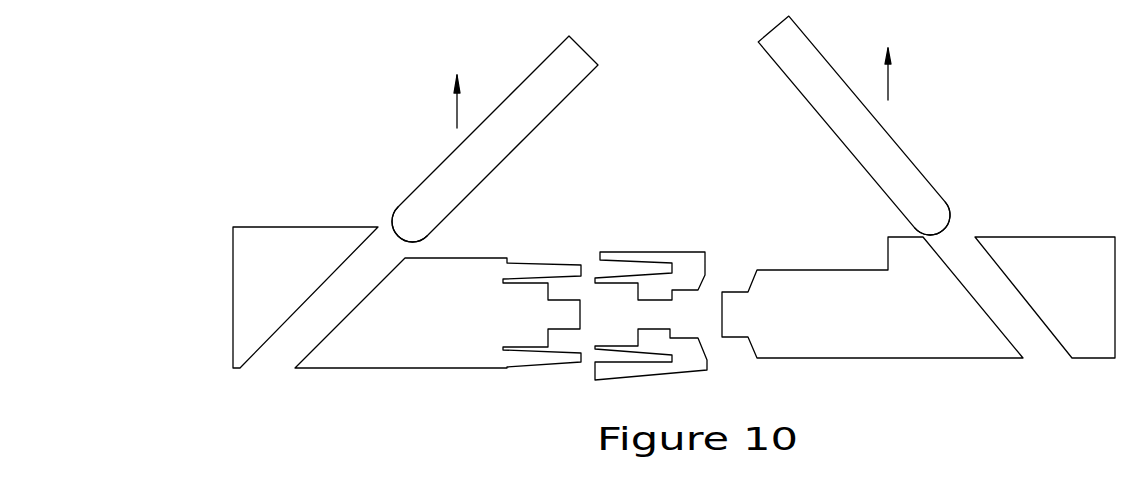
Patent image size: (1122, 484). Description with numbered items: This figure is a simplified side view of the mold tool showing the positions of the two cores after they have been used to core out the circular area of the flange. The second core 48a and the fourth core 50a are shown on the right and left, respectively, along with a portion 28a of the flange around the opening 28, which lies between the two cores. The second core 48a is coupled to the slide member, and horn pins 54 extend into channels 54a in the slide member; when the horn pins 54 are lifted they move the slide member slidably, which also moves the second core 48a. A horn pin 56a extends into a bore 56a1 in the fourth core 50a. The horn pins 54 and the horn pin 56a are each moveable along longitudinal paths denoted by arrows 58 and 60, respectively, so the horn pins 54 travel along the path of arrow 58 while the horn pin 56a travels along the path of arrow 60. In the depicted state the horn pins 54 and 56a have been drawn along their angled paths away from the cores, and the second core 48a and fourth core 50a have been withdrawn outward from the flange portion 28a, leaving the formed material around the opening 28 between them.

The opening 28 is at (630, 345).
The portion 28a is at (635, 252).
The second core 48a is at (800, 282).
The fourth core 50a is at (390, 358).
The horn pins 54 is at (835, 109).
The channels 54a is at (988, 256).
The horn pin 56a is at (527, 126).
The bore 56a1 is at (385, 272).
The arrow 58 is at (888, 72).
The arrow 60 is at (457, 102).